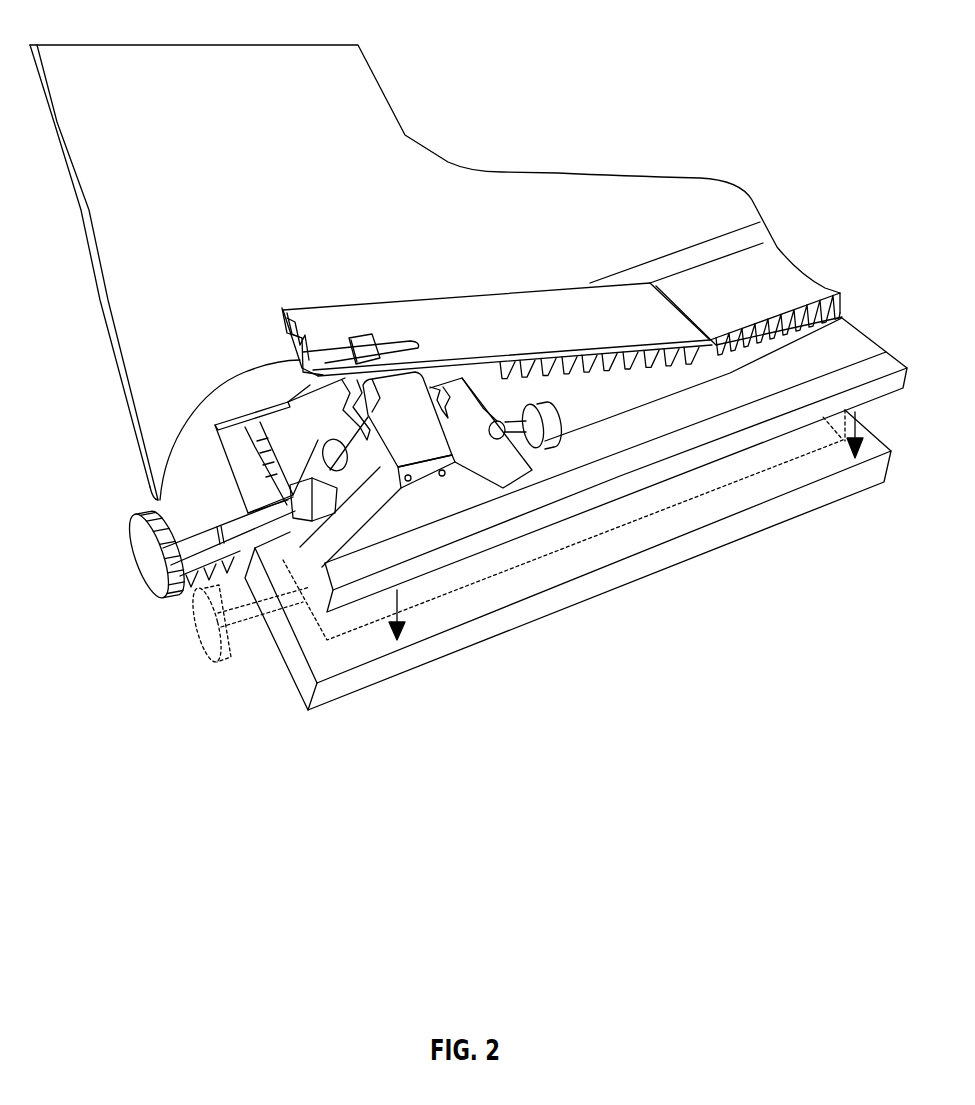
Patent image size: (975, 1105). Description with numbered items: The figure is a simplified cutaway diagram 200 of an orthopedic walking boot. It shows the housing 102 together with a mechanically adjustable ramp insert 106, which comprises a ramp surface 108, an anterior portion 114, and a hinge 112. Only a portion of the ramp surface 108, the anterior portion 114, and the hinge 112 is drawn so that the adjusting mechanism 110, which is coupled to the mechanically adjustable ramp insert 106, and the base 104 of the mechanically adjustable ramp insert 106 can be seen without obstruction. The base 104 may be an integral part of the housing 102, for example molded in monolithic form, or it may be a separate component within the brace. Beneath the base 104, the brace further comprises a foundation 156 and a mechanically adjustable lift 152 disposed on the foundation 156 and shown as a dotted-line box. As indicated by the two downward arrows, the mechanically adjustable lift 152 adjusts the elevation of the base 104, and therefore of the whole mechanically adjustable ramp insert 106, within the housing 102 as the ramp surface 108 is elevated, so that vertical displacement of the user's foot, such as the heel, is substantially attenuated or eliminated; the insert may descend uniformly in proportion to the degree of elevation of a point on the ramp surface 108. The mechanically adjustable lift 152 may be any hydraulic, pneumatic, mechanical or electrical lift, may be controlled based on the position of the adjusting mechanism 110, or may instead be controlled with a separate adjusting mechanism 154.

The housing 102 is at (95, 48).
The base 104 is at (473, 543).
The mechanically adjustable ramp insert 106 is at (278, 380).
The ramp surface 108 is at (307, 322).
The adjusting mechanism 110 is at (172, 600).
The hinge 112 is at (649, 281).
The anterior portion 114 is at (717, 274).
The mechanically adjustable lift 152 is at (592, 525).
The separate adjusting mechanism 154 is at (228, 648).
The foundation 156 is at (523, 615).
The simplified cutaway diagram 200 is at (587, 84).